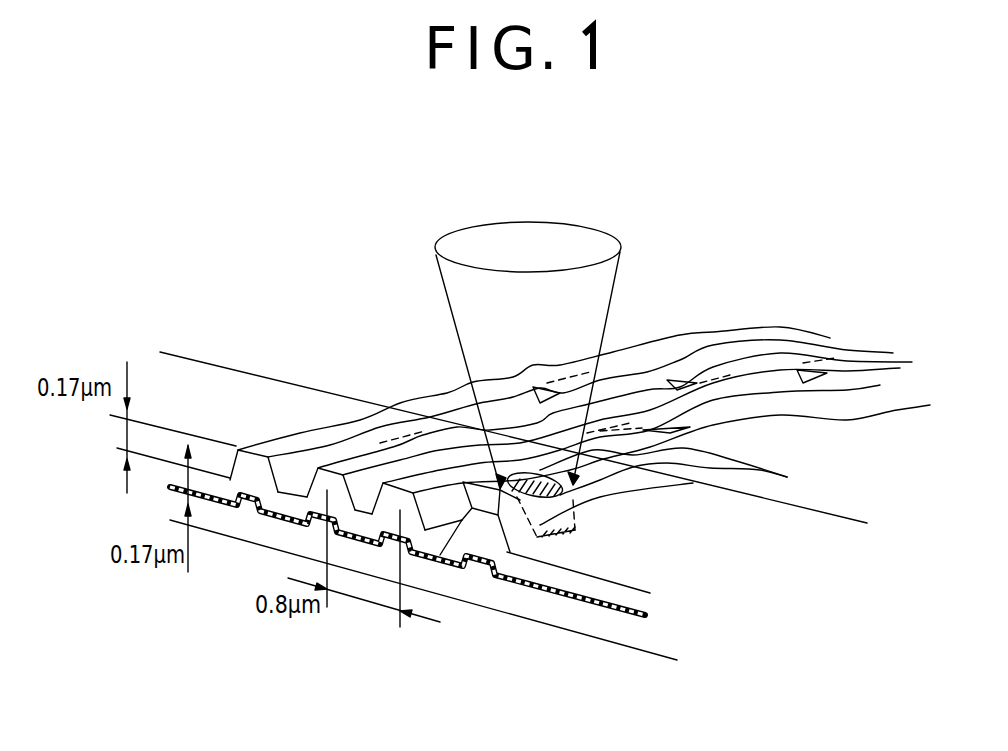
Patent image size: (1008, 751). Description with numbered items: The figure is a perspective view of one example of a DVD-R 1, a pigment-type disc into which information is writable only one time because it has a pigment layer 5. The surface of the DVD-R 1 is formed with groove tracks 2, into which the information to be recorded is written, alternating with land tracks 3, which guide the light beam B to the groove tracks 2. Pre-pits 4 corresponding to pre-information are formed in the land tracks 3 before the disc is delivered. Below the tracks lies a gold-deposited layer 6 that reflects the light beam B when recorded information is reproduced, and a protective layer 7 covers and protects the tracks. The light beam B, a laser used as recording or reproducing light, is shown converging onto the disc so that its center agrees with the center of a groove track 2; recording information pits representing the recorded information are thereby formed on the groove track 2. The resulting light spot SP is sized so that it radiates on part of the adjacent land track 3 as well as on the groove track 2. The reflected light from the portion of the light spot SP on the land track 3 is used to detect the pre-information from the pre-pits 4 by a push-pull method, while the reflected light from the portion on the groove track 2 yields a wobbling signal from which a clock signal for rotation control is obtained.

The DVD-R 1 is at (732, 602).
The groove tracks 2 is at (330, 447).
The land tracks 3 is at (292, 470).
The pre-pits 4 is at (384, 433).
The pigment layer 5 is at (628, 583).
The gold-deposited layer 6 is at (572, 598).
The protective layer 7 is at (177, 358).
The light beam B is at (618, 288).
The light spot SP is at (620, 500).